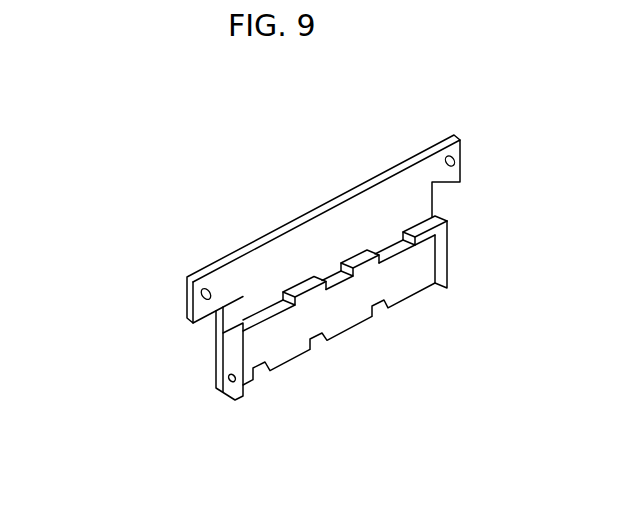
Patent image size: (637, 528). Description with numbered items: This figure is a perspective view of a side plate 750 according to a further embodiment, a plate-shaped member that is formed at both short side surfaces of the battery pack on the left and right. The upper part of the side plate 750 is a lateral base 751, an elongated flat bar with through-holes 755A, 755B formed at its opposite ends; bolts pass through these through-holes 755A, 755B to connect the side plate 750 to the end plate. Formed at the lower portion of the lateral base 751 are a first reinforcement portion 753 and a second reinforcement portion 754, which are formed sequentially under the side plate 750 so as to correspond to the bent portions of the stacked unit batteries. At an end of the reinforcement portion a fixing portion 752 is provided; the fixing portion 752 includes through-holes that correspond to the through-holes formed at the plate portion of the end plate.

The side plate 750 is at (118, 92).
The lateral base 751 is at (386, 196).
The fixing portion 752 is at (232, 356).
The first reinforcement portion 753 is at (224, 311).
The second reinforcement portion 754 is at (281, 300).
The through-hole 755A is at (205, 302).
The through-hole 755B is at (451, 155).